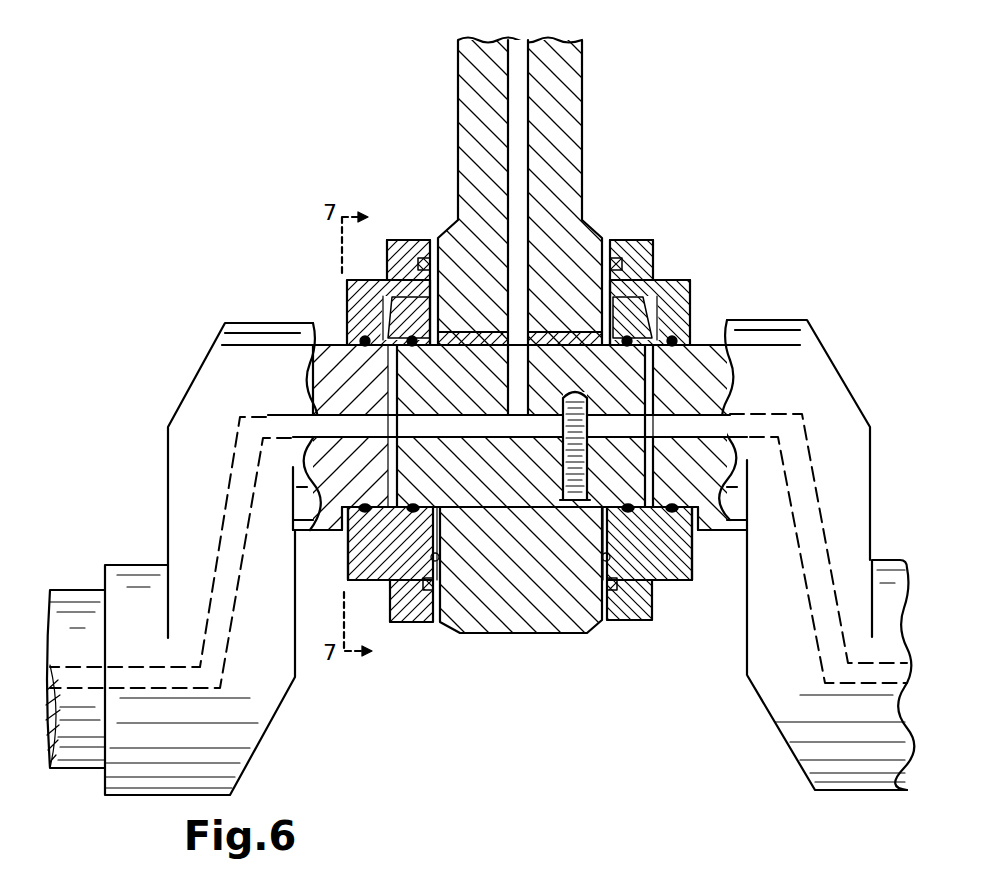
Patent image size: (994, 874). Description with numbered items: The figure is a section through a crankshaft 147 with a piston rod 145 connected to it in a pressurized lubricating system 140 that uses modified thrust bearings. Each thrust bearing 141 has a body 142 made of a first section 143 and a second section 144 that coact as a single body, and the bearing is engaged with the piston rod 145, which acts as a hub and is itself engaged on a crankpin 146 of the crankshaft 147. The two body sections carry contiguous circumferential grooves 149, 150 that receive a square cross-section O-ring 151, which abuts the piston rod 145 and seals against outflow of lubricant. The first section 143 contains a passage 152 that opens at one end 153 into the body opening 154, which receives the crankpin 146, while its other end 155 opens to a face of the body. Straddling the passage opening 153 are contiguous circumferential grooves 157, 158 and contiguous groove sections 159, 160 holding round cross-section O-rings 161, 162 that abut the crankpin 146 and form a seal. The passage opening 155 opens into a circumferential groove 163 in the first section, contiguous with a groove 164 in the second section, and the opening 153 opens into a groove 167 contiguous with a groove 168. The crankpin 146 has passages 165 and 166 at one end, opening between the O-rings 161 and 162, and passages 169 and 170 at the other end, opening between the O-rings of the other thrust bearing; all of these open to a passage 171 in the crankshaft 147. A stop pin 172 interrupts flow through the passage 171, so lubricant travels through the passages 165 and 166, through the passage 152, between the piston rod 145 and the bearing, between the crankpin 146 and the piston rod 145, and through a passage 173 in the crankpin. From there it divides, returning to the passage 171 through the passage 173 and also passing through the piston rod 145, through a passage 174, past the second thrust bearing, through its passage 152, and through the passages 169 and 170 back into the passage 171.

The pressurized lubricating system 140 is at (666, 226).
The thrust bearing 141 is at (693, 281).
The body 142 is at (348, 570).
The first section 143 is at (626, 240).
The second section 144 is at (633, 622).
The piston rod 145 is at (570, 85).
The crankpin 146 is at (493, 483).
The crankshaft 147 is at (885, 560).
The circumferential groove 149 is at (430, 266).
The circumferential groove 150 is at (422, 583).
The square cross-section O-ring 151 is at (420, 262).
The passage 152 is at (384, 303).
The end of passage 153 is at (682, 346).
The body opening 154 is at (800, 343).
The other end of passage 155 is at (398, 300).
The circumferential groove 157 is at (365, 340).
The circumferential groove 158 is at (348, 548).
The circumferential groove section 159 is at (440, 334).
The circumferential groove section 160 is at (437, 515).
The round cross-section O-ring 161 is at (312, 372).
The round cross-section O-ring 162 is at (414, 346).
The circumferential groove 163 is at (433, 283).
The circumferential groove 164 is at (602, 557).
The passage 165 is at (697, 403).
The passage 166 is at (653, 466).
The circumferential groove 167 is at (396, 352).
The groove 168 is at (383, 505).
The passage 169 is at (313, 403).
The passage 170 is at (316, 440).
The passage 171 is at (817, 508).
The stop pin 172 is at (587, 425).
The passage 173 is at (515, 417).
The passage 174 is at (514, 48).